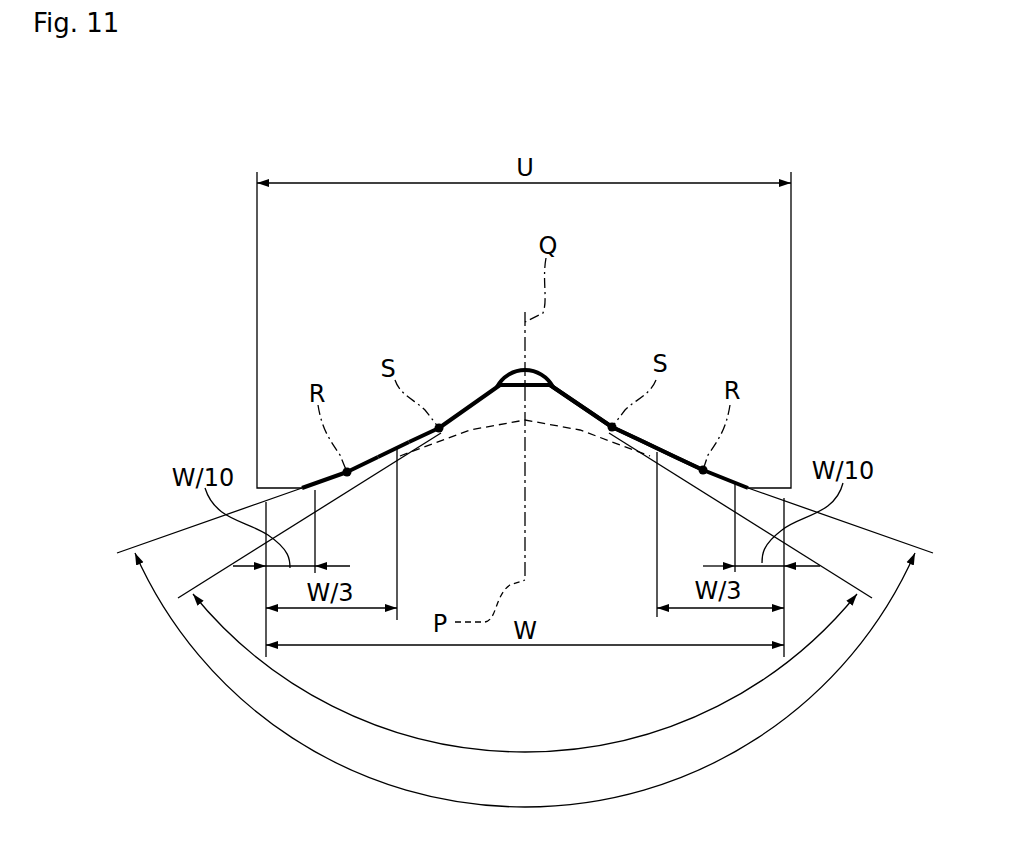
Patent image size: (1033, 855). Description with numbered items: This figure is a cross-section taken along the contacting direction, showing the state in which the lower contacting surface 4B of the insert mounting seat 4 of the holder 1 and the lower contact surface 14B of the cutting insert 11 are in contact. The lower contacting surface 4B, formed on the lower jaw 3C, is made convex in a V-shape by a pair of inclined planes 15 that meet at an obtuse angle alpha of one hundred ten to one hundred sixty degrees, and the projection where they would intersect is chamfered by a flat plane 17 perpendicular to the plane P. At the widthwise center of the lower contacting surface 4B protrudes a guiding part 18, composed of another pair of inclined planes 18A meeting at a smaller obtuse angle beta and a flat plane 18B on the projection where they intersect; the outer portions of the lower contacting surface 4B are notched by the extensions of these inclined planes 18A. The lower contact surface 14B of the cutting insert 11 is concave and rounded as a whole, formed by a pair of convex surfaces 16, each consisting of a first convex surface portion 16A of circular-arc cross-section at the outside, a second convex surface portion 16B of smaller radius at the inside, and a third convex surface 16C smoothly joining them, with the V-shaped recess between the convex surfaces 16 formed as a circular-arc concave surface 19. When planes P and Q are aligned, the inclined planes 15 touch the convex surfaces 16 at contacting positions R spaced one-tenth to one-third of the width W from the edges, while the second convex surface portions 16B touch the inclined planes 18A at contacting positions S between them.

The holder 1 is at (562, 702).
The lower jaw 3C is at (762, 583).
The insert mounting seat 4 is at (800, 528).
The lower contacting surface 4B is at (661, 440).
The cutting insert 11 is at (741, 347).
The lower contact surface 14B is at (572, 415).
The inclined plane 15 is at (302, 487).
The convex surface 16 is at (525, 521).
The first convex surface portion 16A is at (374, 463).
The second convex surface portion 16B is at (525, 477).
The third convex surface 16C is at (401, 458).
The flat plane 17 is at (518, 420).
The guiding part 18 is at (534, 345).
The inclined plane of guiding part 18A is at (484, 392).
The flat plane of guiding part 18B is at (540, 372).
The concave surface 19 is at (500, 384).